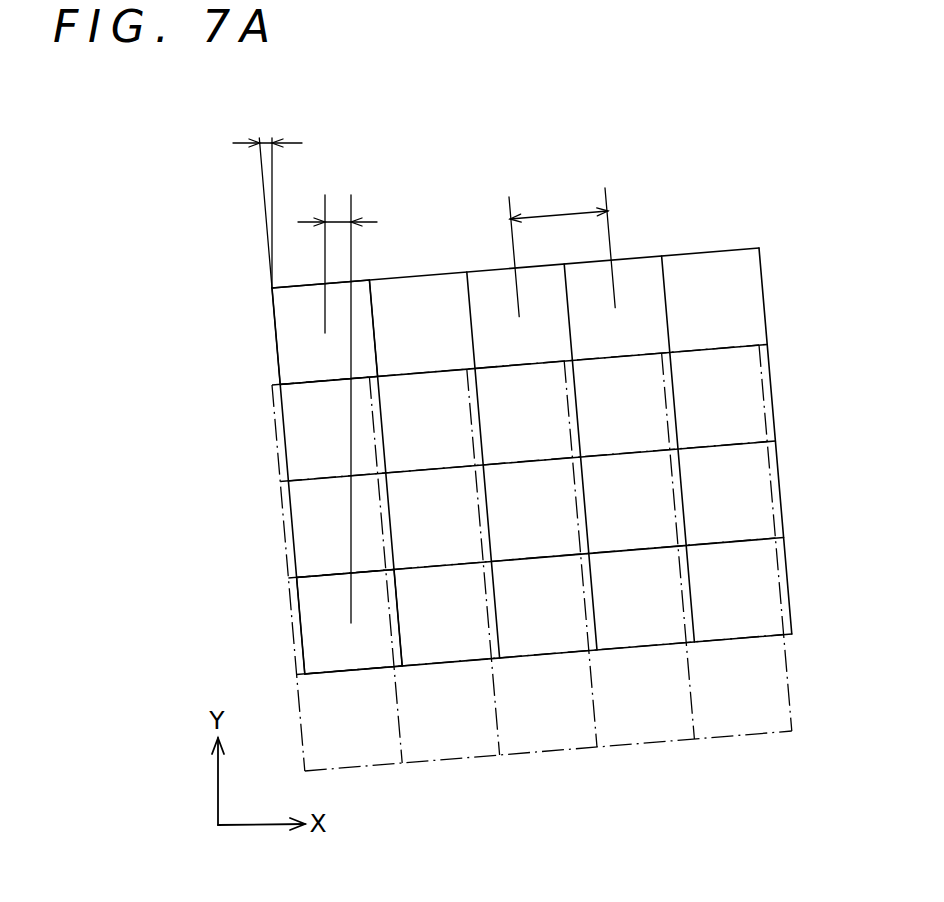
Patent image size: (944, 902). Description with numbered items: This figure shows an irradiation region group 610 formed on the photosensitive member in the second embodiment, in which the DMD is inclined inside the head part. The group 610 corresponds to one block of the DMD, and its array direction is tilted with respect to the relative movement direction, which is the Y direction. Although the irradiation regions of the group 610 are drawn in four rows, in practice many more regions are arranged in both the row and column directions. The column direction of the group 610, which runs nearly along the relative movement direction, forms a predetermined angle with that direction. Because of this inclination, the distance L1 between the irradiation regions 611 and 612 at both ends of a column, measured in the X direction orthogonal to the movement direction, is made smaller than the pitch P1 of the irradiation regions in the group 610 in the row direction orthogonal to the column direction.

The irradiation region group 610 is at (688, 233).
The irradiation region 611 is at (293, 347).
The irradiation region 612 is at (323, 649).
The distance between irradiation regions L1 is at (336, 220).
The pitch of the irradiation regions P1 is at (557, 214).